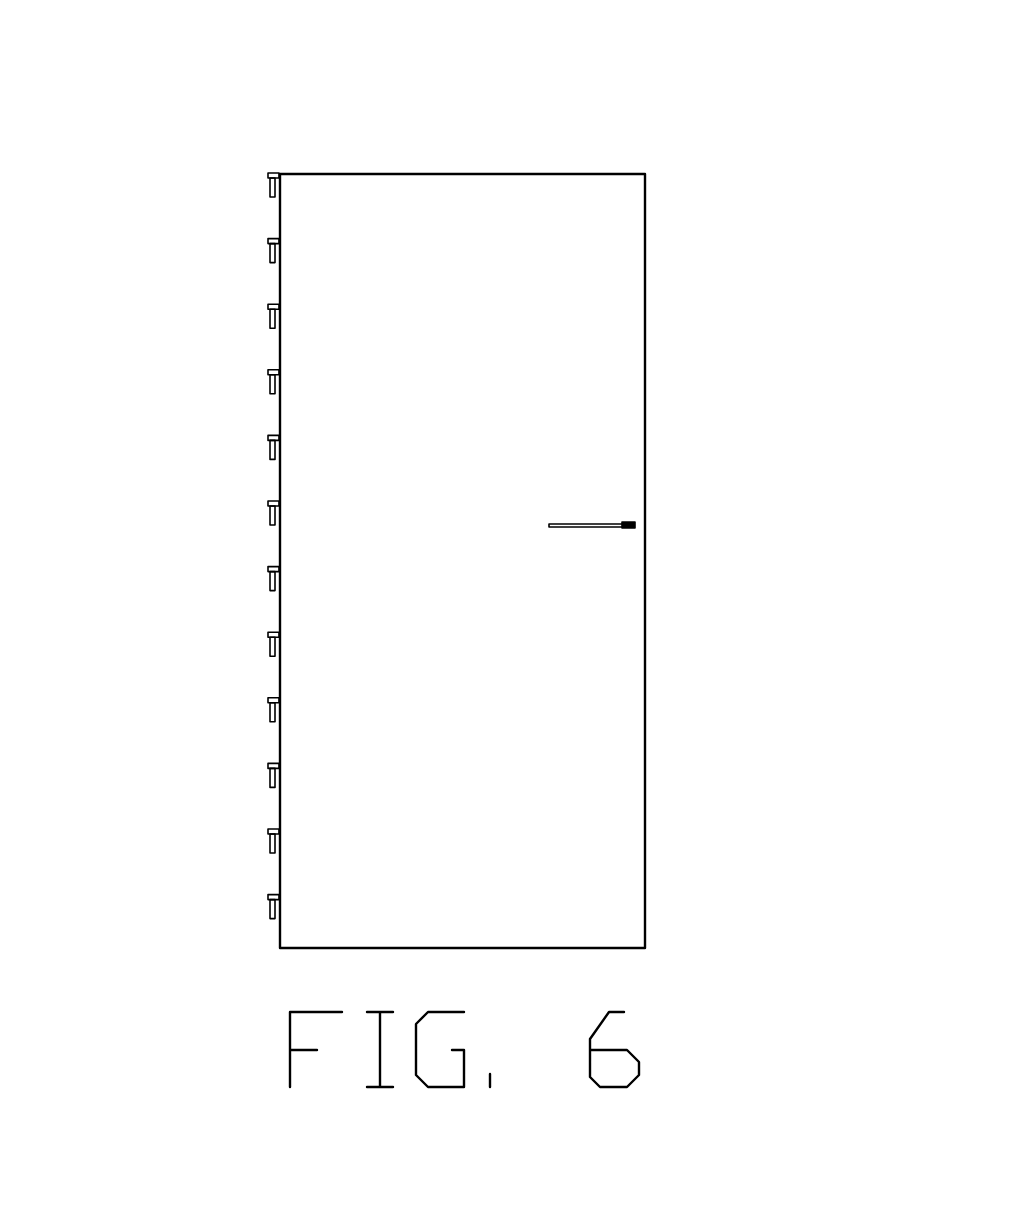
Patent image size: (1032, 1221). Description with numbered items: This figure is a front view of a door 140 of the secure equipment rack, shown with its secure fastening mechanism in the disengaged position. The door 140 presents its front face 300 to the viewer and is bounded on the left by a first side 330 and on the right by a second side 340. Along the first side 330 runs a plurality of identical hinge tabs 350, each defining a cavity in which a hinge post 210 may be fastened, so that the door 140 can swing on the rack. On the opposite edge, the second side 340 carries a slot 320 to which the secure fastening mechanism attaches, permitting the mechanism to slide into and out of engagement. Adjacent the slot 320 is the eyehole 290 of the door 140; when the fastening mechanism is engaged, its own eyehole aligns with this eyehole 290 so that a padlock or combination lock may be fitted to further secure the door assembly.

The door 140 is at (345, 125).
The front face 300 is at (526, 56).
The second side 340 is at (800, 206).
The first side 330 is at (239, 546).
The hinge post 210 is at (262, 312).
The hinge tab 350 is at (262, 430).
The slot 320 is at (746, 357).
The eyehole 290 is at (736, 605).